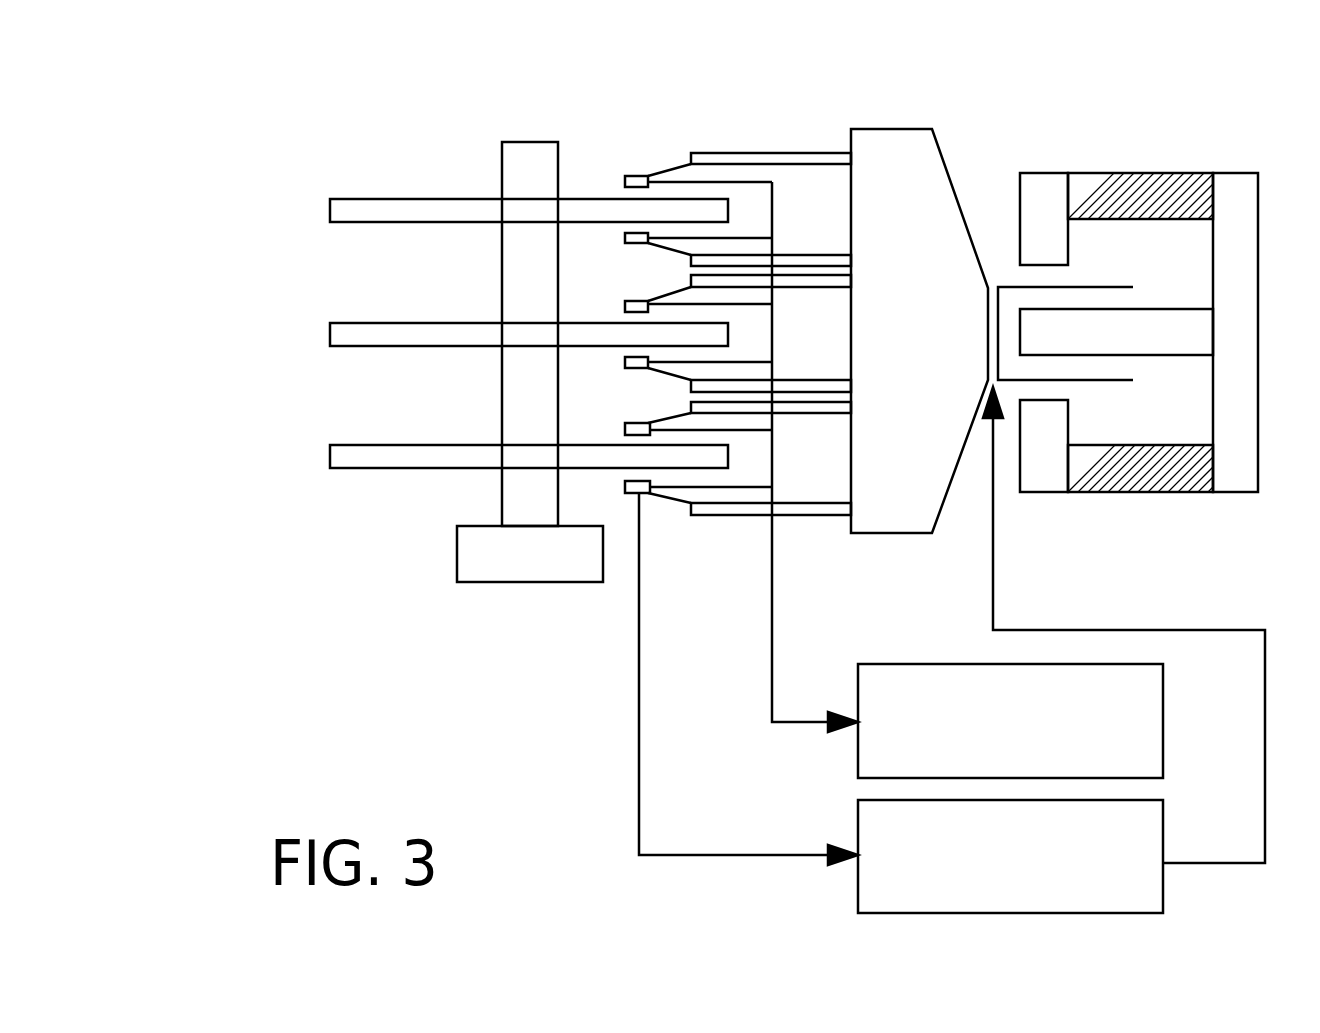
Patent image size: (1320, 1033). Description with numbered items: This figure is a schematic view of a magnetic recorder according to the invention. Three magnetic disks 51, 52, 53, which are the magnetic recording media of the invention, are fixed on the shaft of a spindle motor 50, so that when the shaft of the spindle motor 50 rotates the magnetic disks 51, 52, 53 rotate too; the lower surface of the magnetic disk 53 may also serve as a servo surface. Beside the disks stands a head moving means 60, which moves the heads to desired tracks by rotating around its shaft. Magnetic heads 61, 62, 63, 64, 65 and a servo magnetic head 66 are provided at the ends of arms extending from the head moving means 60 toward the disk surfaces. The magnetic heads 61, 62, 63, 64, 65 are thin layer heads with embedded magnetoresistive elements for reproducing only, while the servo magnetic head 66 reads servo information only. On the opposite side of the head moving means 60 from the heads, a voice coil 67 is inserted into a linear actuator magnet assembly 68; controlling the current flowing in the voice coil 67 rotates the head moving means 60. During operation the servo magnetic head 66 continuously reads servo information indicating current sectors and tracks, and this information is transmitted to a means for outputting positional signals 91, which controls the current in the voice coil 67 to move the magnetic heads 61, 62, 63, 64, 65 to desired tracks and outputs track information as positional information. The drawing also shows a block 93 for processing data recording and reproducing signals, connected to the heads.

The spindle motor 50 is at (508, 583).
The magnetic disk 51 is at (353, 199).
The magnetic disk 52 is at (353, 323).
The magnetic disk 53 is at (353, 445).
The head moving means 60 is at (895, 128).
The magnetic head 61 is at (633, 175).
The magnetic head 62 is at (625, 233).
The magnetic head 63 is at (625, 300).
The magnetic head 64 is at (625, 357).
The magnetic head 65 is at (625, 437).
The servo magnetic head 66 is at (640, 493).
The voice coil 67 is at (1001, 283).
The linear actuator magnet assembly 68 is at (1185, 173).
The means for outputting positional signals 91 is at (1165, 887).
The means for processing data recording and reproducing signals 93 is at (912, 664).